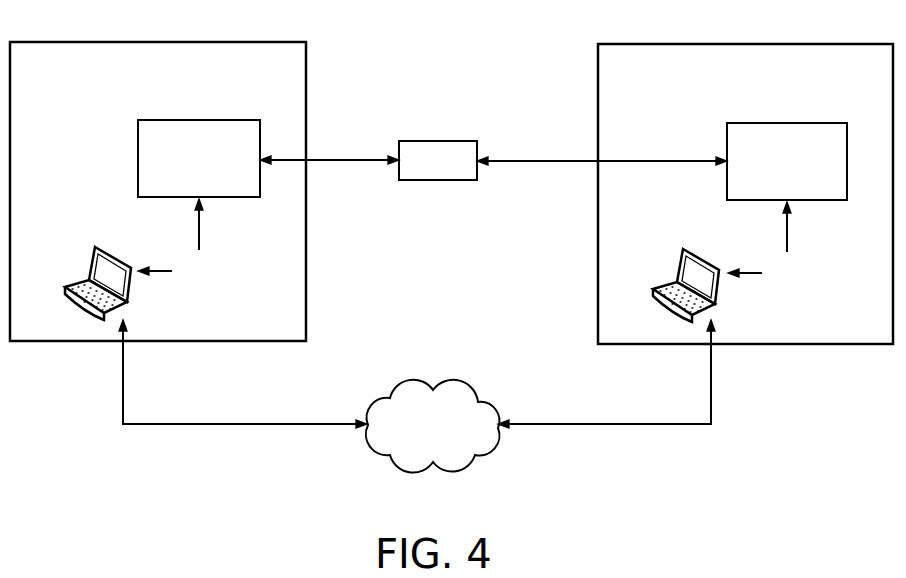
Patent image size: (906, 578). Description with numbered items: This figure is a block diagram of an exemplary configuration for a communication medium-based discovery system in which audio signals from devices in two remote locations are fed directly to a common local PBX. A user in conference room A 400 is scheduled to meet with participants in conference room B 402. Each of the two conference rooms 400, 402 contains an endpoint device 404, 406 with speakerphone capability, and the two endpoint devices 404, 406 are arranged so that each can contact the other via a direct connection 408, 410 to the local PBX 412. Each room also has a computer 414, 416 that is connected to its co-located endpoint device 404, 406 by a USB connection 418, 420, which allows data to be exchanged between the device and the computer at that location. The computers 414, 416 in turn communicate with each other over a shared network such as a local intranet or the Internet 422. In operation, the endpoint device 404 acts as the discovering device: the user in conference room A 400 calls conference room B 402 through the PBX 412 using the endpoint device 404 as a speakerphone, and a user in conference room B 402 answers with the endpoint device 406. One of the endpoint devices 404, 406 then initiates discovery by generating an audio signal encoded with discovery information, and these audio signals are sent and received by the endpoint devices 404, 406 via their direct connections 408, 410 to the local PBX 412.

The conference room A 400 is at (306, 66).
The conference room B 402 is at (598, 66).
The endpoint device 404 is at (198, 120).
The endpoint device 406 is at (787, 123).
The direct connection 408 is at (322, 158).
The direct connection 410 is at (581, 158).
The local PBX 412 is at (438, 141).
The computer 414 is at (98, 248).
The computer 416 is at (688, 250).
The USB connection 418 is at (199, 225).
The USB connection 420 is at (787, 227).
The intranet or Internet 422 is at (413, 376).